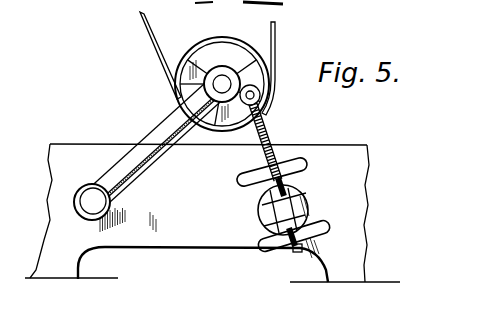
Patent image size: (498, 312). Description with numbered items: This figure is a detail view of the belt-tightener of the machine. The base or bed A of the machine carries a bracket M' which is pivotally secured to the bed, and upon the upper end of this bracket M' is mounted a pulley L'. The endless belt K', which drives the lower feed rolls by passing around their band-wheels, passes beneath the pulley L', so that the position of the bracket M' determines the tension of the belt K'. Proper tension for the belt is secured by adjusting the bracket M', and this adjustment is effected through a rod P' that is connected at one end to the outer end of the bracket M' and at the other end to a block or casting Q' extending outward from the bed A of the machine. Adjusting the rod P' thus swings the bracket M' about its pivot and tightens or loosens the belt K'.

The base or bed A is at (212, 213).
The endless belt K' is at (281, 68).
The pulley L' is at (222, 72).
The rod P' is at (284, 173).
The block or casting Q' is at (298, 221).
The bracket M' is at (167, 143).